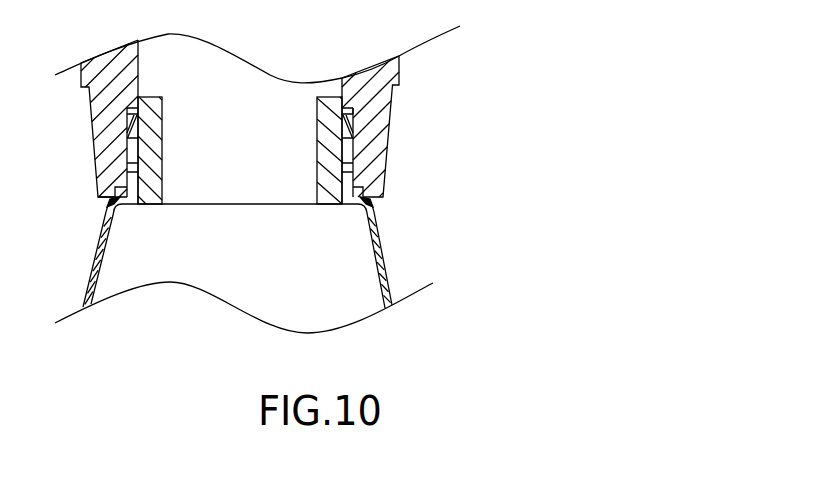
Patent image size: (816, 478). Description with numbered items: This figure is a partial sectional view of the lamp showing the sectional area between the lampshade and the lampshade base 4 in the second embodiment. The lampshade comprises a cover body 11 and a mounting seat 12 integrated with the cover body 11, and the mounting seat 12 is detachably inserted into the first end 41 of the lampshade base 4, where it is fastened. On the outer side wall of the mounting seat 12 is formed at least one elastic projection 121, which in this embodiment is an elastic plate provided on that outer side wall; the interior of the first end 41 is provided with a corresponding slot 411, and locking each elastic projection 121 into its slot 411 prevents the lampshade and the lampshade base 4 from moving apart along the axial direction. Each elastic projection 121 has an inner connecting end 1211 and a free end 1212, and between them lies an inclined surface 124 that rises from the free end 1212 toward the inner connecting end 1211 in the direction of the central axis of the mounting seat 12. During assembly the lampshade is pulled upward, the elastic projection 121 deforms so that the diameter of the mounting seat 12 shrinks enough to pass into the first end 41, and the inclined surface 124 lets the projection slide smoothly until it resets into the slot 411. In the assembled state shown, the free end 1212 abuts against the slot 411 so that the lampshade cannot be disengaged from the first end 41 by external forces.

The lampshade base 4 is at (350, 80).
The first end 41 is at (362, 196).
The slot 411 is at (353, 167).
The mounting seat 12 is at (372, 205).
The elastic projection 121 is at (633, 93).
The inner connecting end 1211 is at (353, 119).
The free end 1212 is at (353, 137).
The inclined surface 124 is at (353, 112).
The cover body 11 is at (388, 283).